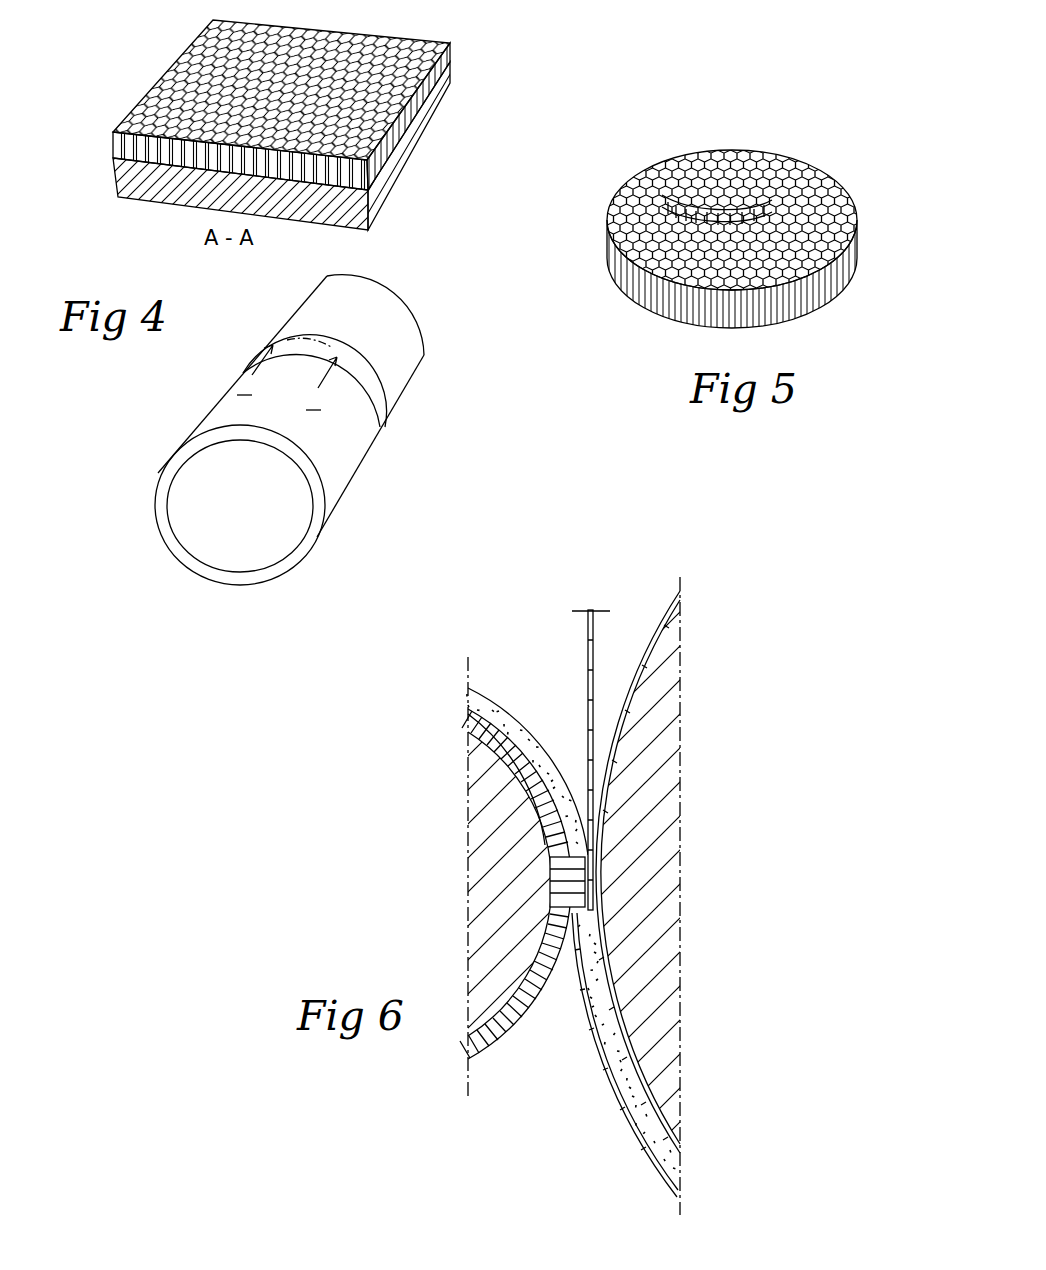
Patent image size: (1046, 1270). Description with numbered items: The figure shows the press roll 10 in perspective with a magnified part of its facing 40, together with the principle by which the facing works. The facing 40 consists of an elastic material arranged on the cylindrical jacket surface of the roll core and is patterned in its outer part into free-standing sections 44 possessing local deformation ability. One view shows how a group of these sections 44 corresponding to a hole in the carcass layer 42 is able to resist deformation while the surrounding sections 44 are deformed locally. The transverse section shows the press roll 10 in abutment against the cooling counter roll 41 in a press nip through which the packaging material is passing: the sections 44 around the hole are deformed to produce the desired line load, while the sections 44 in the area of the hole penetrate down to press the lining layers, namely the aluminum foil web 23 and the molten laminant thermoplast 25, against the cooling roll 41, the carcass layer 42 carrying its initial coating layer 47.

In FIG. 4, the press roll 10 is at (402, 392).
In FIG. 6, the press roll 10 is at (478, 835).
In FIG. 6, the aluminum foil web 23 is at (647, 647).
In FIG. 6, the molten laminant thermoplast 25 is at (585, 653).
In FIG. 4, the facing 40 is at (115, 181).
In FIG. 6, the cooling counter roll 41 is at (677, 730).
In FIG. 6, the carcass layer 42 is at (680, 1177).
In FIG. 4, the sections possessing local deformation ability 44 is at (113, 144).
In FIG. 5, the sections possessing local deformation ability 44 is at (733, 160).
In FIG. 6, the sections possessing local deformation ability 44 is at (603, 903).
In FIG. 6, the coating layer 47 is at (630, 1130).